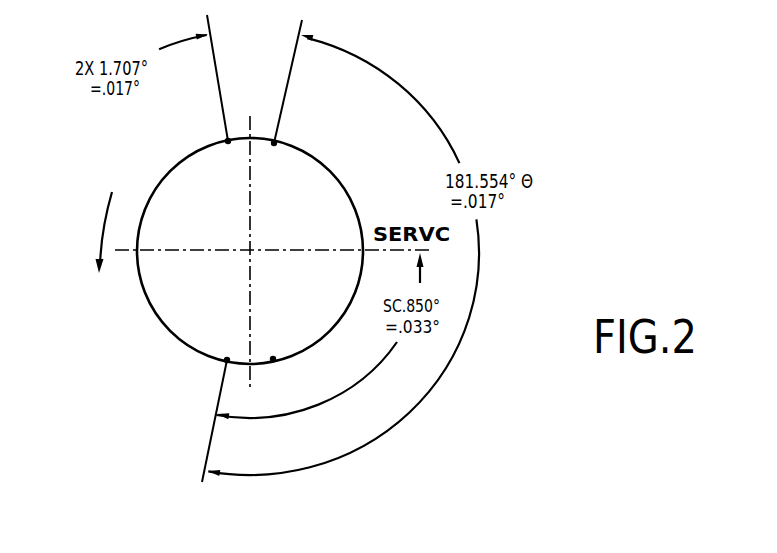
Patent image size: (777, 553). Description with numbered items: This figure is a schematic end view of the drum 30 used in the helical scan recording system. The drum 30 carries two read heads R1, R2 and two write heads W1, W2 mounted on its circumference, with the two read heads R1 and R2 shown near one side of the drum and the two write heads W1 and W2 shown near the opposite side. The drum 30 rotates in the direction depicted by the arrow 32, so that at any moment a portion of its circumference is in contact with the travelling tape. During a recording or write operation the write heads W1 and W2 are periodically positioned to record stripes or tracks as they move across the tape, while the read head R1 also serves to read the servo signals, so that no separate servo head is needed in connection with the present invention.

The drum 30 is at (147, 305).
The arrow 32 is at (100, 228).
The read head R1 is at (228, 141).
The read head R2 is at (276, 143).
The write head W1 is at (273, 360).
The write head W2 is at (226, 361).